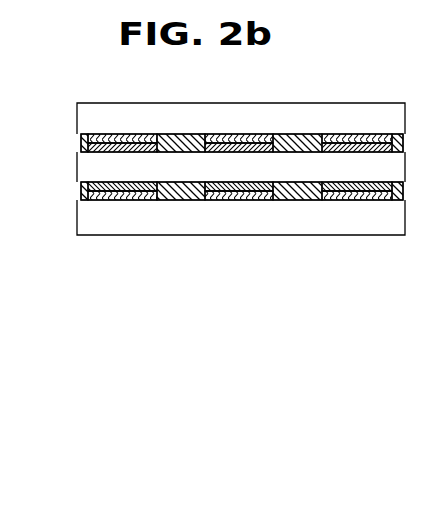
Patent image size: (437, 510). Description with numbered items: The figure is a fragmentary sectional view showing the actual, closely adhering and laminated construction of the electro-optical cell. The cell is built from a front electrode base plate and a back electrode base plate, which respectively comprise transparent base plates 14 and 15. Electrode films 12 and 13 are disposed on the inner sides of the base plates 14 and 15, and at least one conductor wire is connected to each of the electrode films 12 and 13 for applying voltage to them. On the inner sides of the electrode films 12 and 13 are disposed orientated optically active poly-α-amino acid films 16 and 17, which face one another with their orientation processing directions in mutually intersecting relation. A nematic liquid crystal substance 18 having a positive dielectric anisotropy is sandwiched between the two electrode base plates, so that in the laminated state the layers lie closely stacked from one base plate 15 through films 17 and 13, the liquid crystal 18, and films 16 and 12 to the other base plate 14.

The electrode film 12 is at (120, 200).
The electrode film 13 is at (123, 134).
The transparent base plate 14 is at (83, 222).
The transparent base plate 15 is at (81, 118).
The orientated optically active poly-α-amino acid film 16 is at (86, 196).
The orientated optically active poly-α-amino acid film 17 is at (84, 144).
The nematic liquid crystal substance 18 is at (86, 170).